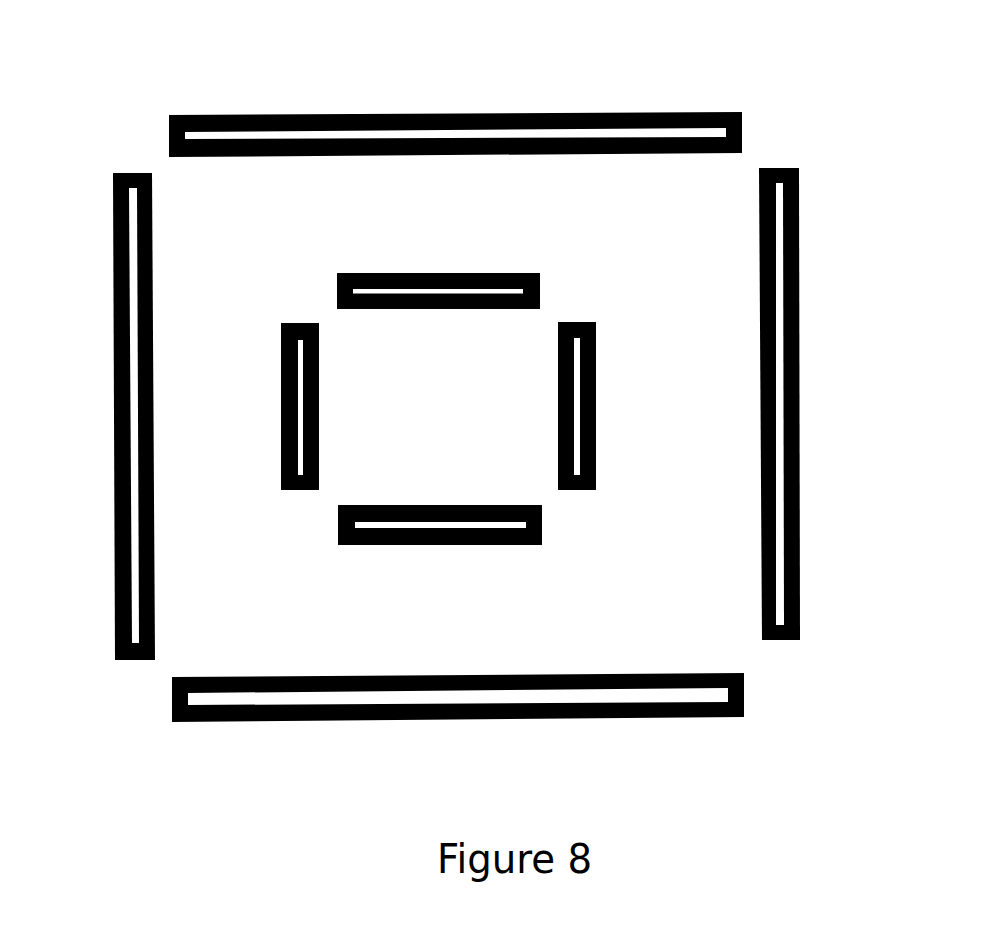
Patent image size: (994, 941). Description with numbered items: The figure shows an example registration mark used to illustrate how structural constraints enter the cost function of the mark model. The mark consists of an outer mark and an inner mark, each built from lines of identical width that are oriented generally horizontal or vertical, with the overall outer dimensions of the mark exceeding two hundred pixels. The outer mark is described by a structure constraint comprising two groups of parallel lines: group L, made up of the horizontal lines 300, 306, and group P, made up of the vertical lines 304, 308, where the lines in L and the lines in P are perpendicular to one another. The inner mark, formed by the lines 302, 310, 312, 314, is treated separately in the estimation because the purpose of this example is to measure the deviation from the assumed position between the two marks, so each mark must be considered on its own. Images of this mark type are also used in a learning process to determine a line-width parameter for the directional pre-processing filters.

The outer mark line 300 is at (598, 113).
The inner mark line 302 is at (487, 273).
The outer mark line 304 is at (800, 285).
The outer mark line 306 is at (316, 722).
The outer mark line 308 is at (113, 295).
The inner mark line 310 is at (597, 362).
The inner mark line 312 is at (437, 545).
The inner mark line 314 is at (320, 407).